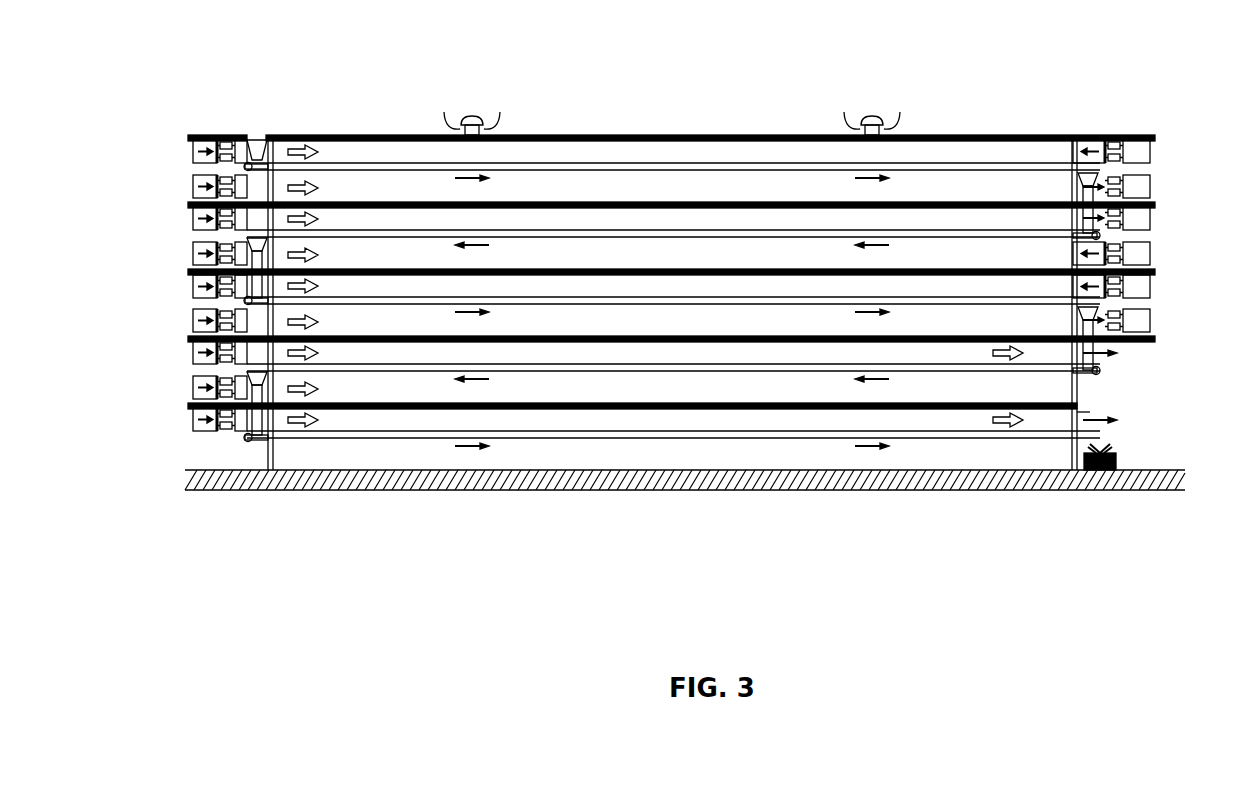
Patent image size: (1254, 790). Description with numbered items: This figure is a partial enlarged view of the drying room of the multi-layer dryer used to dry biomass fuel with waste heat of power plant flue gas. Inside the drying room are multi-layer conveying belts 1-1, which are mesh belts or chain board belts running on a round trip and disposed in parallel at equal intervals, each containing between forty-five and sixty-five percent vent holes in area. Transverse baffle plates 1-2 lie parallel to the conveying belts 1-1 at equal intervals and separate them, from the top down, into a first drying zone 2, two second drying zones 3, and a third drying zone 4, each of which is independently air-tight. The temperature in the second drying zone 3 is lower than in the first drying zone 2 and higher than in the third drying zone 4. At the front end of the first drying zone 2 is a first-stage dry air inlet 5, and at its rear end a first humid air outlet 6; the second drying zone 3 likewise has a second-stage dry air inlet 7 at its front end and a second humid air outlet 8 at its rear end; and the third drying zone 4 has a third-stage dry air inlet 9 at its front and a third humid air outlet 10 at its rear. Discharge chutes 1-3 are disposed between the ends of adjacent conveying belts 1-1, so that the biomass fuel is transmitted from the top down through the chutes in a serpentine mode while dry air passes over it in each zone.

The multi-layer conveying belts 1-1 is at (560, 168).
The transverse baffle plates 1-2 is at (635, 203).
The discharge chutes 1-3 is at (277, 437).
The first drying zone 2 is at (203, 168).
The second drying zone 3 is at (208, 236).
The third drying zone 4 is at (222, 452).
The first-stage dry air inlet 5 is at (197, 137).
The first humid air outlet 6 is at (1107, 137).
The second-stage dry air inlet 7 is at (197, 288).
The second humid air outlet 8 is at (1133, 268).
The third-stage dry air inlet 9 is at (203, 362).
The third humid air outlet 10 is at (1075, 420).